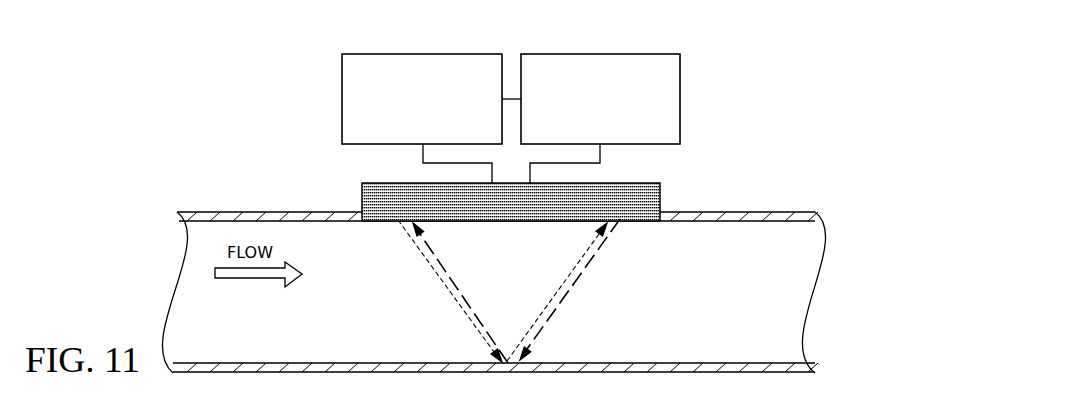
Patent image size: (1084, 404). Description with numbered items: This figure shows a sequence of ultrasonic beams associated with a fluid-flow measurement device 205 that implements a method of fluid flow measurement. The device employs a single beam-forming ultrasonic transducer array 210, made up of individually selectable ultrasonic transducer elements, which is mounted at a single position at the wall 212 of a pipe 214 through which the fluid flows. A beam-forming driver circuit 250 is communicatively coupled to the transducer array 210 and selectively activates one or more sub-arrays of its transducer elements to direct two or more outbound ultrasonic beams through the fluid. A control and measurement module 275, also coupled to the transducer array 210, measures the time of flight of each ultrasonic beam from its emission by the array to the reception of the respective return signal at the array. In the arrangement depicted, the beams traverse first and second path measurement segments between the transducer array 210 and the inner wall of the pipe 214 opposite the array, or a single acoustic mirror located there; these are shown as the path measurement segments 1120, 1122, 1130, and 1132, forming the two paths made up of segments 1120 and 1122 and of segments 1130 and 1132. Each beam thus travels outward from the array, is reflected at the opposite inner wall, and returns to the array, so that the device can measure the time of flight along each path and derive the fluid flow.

The fluid-flow measurement device 205 is at (130, 220).
The beam-forming ultrasonic transducer array 210 is at (362, 201).
The wall 212 is at (710, 211).
The pipe 214 is at (184, 279).
The beam-forming driver circuit 250 is at (342, 88).
The control and measurement module 275 is at (680, 88).
The path measurement segment 1120 is at (449, 288).
The path measurement segment 1122 is at (570, 275).
The path measurement segment 1130 is at (573, 285).
The path measurement segment 1132 is at (451, 275).